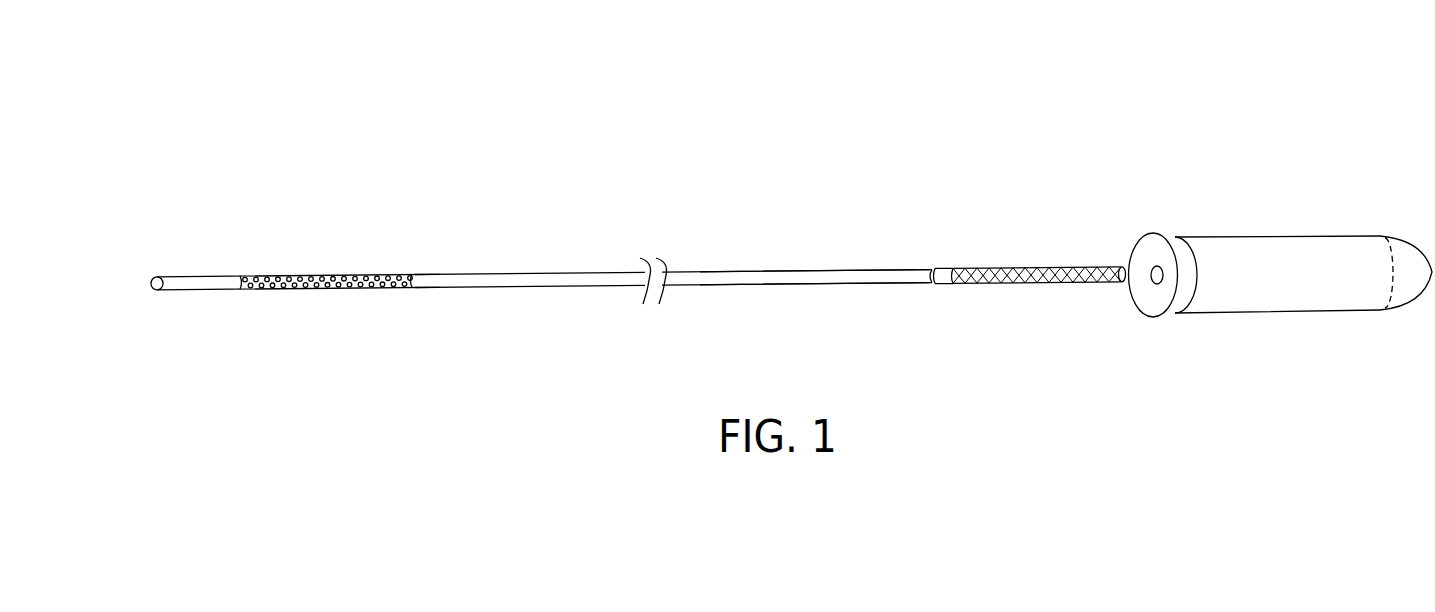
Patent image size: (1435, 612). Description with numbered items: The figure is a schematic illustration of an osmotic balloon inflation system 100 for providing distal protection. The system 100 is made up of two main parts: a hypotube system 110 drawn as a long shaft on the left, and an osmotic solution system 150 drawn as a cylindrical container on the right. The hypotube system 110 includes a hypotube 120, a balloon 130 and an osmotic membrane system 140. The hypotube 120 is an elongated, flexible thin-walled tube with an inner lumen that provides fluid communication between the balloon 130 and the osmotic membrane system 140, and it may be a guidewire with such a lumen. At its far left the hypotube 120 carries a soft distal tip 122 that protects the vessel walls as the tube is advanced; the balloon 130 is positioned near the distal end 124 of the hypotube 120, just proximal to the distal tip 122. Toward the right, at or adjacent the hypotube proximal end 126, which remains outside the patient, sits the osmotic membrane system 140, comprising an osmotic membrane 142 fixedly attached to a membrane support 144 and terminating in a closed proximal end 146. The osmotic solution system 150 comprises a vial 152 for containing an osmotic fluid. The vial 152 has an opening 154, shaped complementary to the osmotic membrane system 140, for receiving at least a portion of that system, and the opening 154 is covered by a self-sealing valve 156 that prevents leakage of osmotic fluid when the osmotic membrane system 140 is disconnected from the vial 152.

The osmotic balloon inflation system 100 is at (502, 90).
The hypotube system 110 is at (563, 221).
The hypotube 120 is at (748, 269).
The soft distal tip 122 is at (156, 277).
The distal end 124 is at (431, 324).
The hypotube proximal end 126 is at (912, 245).
The balloon 130 is at (342, 273).
The osmotic membrane system 140 is at (1005, 235).
The osmotic membrane 142 is at (1003, 283).
The membrane support 144 is at (946, 284).
The closed proximal end 146 is at (1122, 277).
The osmotic solution system 150 is at (1237, 212).
The vial 152 is at (1337, 236).
The opening 154 is at (1153, 268).
The self-sealing valve 156 is at (1160, 282).